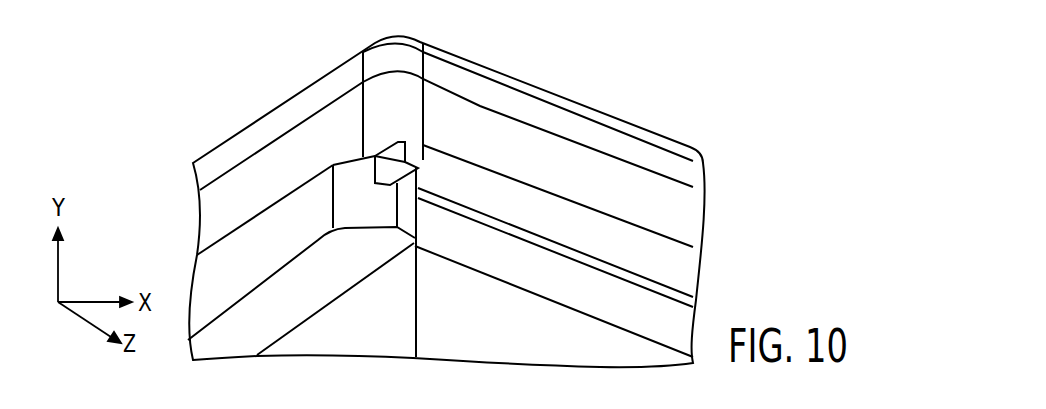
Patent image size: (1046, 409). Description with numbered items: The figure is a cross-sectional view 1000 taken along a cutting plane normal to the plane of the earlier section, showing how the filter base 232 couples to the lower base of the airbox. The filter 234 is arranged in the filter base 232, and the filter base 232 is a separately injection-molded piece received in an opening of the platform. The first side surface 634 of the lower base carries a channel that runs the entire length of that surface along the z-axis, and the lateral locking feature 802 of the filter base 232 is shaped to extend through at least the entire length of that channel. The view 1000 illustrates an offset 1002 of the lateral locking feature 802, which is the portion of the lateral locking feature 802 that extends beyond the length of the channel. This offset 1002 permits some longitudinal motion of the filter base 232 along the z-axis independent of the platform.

The filter base 232 is at (596, 183).
The filter 234 is at (552, 112).
The first side surface 634 is at (210, 277).
The lateral locking feature 802 is at (390, 166).
The cross-sectional view 1000 is at (662, 92).
The offset 1002 is at (420, 152).